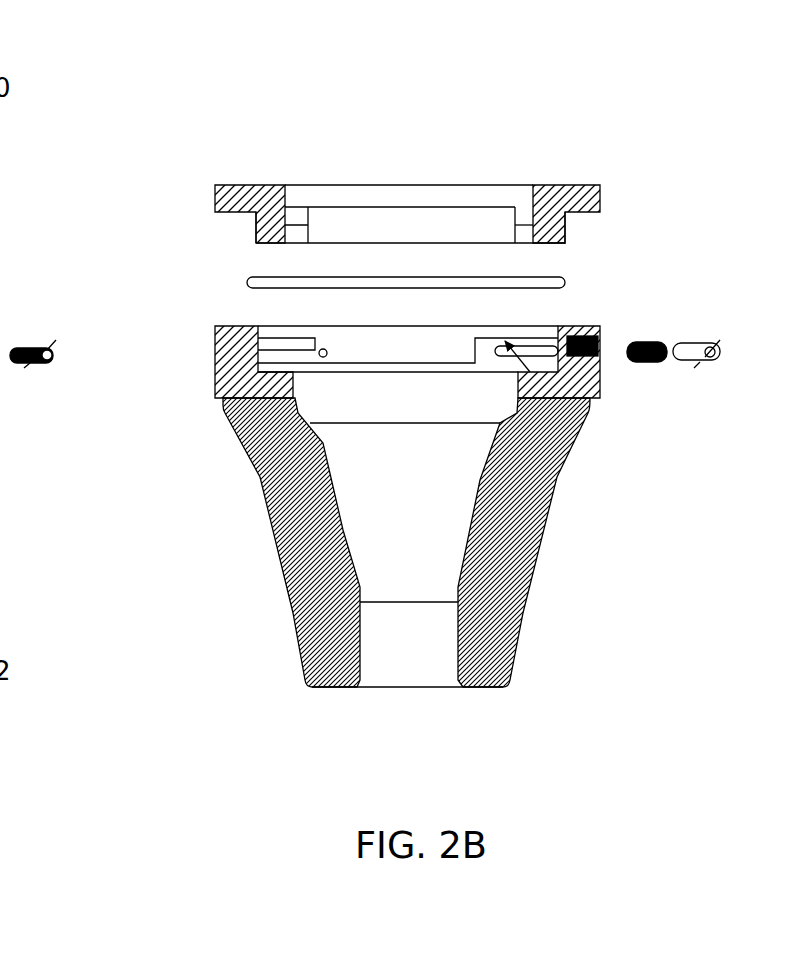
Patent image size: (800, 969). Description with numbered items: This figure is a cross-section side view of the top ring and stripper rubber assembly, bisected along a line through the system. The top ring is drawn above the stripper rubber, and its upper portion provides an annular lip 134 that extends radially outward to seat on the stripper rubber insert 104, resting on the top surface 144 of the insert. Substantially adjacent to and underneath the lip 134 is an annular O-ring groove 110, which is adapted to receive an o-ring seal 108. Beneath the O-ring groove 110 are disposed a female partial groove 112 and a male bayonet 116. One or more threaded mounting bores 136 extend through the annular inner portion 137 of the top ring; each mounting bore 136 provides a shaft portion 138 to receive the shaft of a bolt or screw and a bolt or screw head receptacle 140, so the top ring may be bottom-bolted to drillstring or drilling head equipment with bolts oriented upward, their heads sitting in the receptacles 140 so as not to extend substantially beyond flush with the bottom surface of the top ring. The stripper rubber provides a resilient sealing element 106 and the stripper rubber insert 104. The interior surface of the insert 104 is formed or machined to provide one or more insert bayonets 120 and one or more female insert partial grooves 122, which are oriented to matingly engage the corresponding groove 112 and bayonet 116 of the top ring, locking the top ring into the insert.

The stripper rubber insert 104 is at (441, 512).
The resilient sealing element 106 is at (303, 647).
The o-ring seal 108 is at (257, 288).
The annular O-ring groove 110 is at (250, 213).
The female partial groove 112 is at (253, 232).
The male bayonet 116 is at (253, 247).
The insert bayonet 120 is at (578, 430).
The female insert partial groove 122 is at (600, 390).
The annular lip 134 is at (603, 190).
The threaded mounting bore 136 is at (545, 244).
The annular inner portion 137 is at (493, 185).
The shaft portion 138 is at (518, 207).
The bolt or screw head receptacle 140 is at (537, 222).
The top surface 144 is at (595, 324).